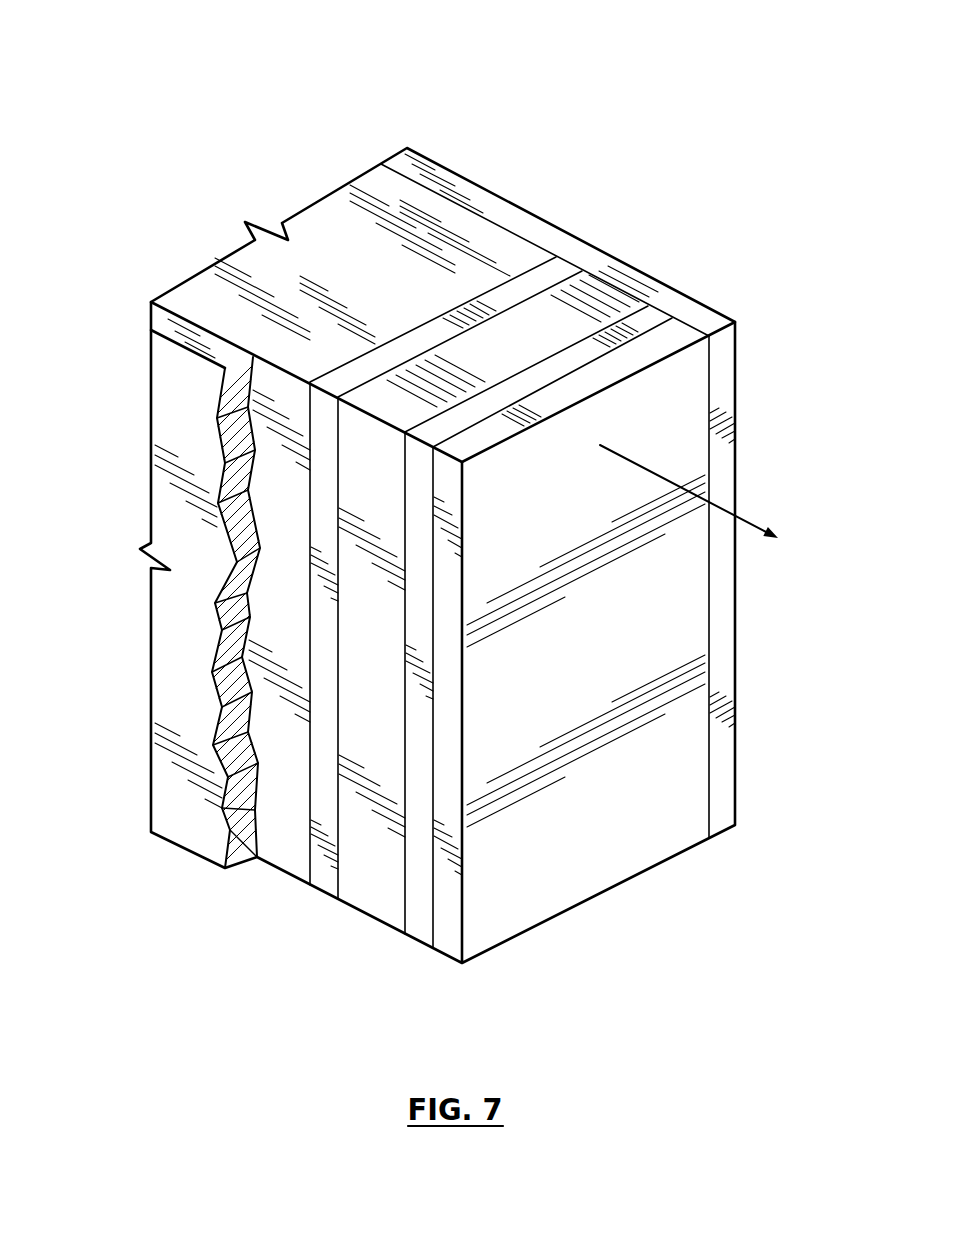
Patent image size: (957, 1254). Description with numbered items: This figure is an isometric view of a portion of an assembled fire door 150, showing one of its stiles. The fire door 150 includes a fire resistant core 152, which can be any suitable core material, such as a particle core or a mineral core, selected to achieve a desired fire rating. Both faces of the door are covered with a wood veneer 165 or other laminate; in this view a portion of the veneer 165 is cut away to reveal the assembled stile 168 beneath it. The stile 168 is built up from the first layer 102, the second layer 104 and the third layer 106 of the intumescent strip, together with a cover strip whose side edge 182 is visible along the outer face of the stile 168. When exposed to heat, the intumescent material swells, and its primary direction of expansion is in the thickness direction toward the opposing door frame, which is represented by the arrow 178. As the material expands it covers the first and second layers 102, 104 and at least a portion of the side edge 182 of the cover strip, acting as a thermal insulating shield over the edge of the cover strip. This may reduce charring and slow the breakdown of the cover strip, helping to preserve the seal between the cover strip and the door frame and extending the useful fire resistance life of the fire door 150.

The fire door 150 is at (481, 142).
The fire resistant core 152 is at (394, 192).
The wood veneer 165 is at (488, 207).
The first layer 102 is at (544, 268).
The third layer 106 is at (597, 299).
The second layer 104 is at (657, 318).
The side edge of the cover strip 182 is at (694, 383).
The arrow 178 is at (718, 507).
The assembled stile 168 is at (312, 914).